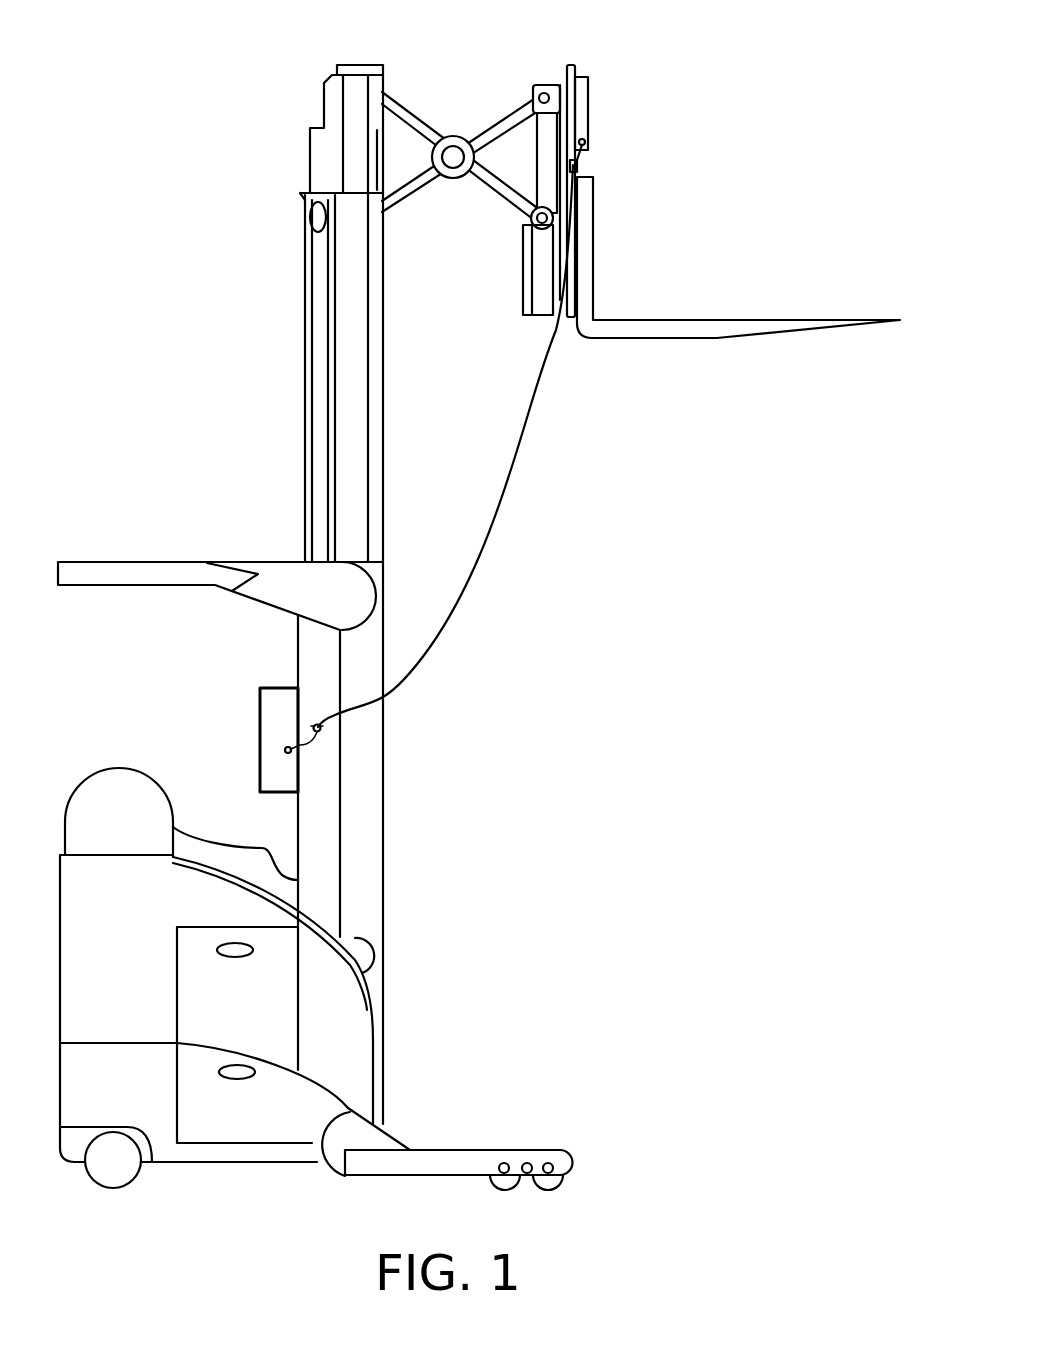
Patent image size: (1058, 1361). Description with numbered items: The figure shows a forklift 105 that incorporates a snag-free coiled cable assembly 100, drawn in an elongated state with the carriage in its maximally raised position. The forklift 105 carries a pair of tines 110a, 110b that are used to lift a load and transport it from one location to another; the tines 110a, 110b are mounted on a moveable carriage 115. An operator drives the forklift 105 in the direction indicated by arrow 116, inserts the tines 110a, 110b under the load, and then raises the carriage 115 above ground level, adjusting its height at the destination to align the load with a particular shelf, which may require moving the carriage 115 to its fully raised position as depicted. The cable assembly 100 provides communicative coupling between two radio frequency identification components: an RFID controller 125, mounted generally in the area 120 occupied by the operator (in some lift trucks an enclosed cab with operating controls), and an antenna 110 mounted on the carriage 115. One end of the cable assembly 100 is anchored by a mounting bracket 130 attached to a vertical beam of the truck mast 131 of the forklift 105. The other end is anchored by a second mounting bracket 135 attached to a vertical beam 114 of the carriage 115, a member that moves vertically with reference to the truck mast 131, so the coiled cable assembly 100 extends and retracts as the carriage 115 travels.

The snag-free coiled cable assembly 100 is at (553, 468).
The forklift 105 is at (866, 573).
The antenna 110 is at (588, 118).
The tine 110a is at (738, 257).
The tine 110b is at (697, 320).
The vertical beam 114 is at (571, 66).
The carriage 115 is at (638, 230).
The arrow 116 is at (497, 1003).
The area 120 is at (113, 697).
The RFID controller 125 is at (260, 732).
The mounting bracket 130 is at (325, 733).
The truck mast 131 is at (420, 873).
The second mounting bracket 135 is at (577, 165).